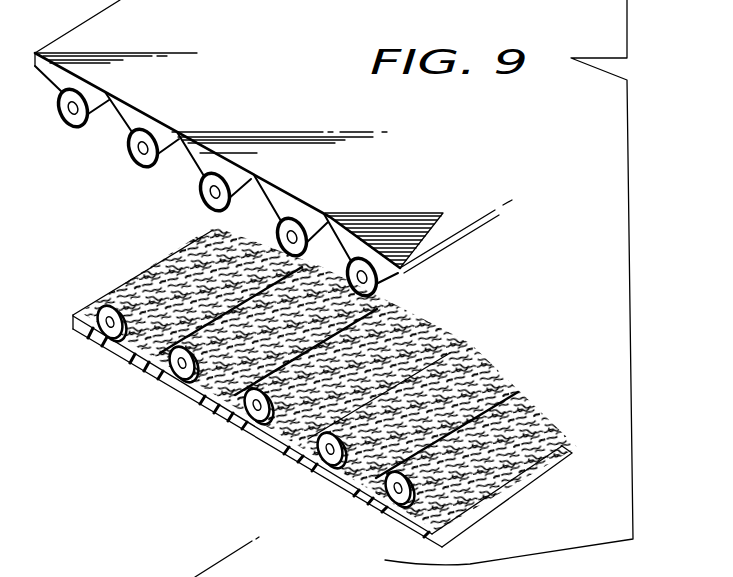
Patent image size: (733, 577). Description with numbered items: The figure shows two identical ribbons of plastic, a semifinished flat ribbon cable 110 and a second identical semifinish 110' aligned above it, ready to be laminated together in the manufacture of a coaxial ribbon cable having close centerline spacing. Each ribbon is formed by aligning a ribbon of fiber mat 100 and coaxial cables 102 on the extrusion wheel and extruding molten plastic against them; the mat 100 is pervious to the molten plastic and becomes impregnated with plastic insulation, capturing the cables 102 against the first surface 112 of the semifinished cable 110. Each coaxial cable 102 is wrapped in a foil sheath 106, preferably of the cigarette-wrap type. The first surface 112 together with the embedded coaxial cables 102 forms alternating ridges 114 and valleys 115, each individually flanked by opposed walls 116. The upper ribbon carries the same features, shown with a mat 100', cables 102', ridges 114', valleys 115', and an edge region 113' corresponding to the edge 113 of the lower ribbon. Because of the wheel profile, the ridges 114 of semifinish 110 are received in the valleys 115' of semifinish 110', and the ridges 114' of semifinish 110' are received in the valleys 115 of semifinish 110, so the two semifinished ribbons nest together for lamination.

The fiber mat 100 is at (273, 176).
The coaxial cable 102 is at (279, 154).
The foil sheath 106 is at (236, 206).
The semifinished flat ribbon cable 110 is at (372, 219).
The first surface 112 is at (276, 196).
The sheet edge 113 is at (155, 83).
The ridge 114 is at (115, 156).
The valley 115 is at (154, 160).
The opposed walls 116 is at (92, 129).
The filled mat assembly 100' is at (325, 386).
The roll pleat 102' is at (155, 380).
The second semifinish 110' is at (430, 496).
The channel ribs 113' is at (258, 432).
The ridge of second semifinish 114' is at (257, 431).
The valley of second semifinish 115' is at (391, 371).